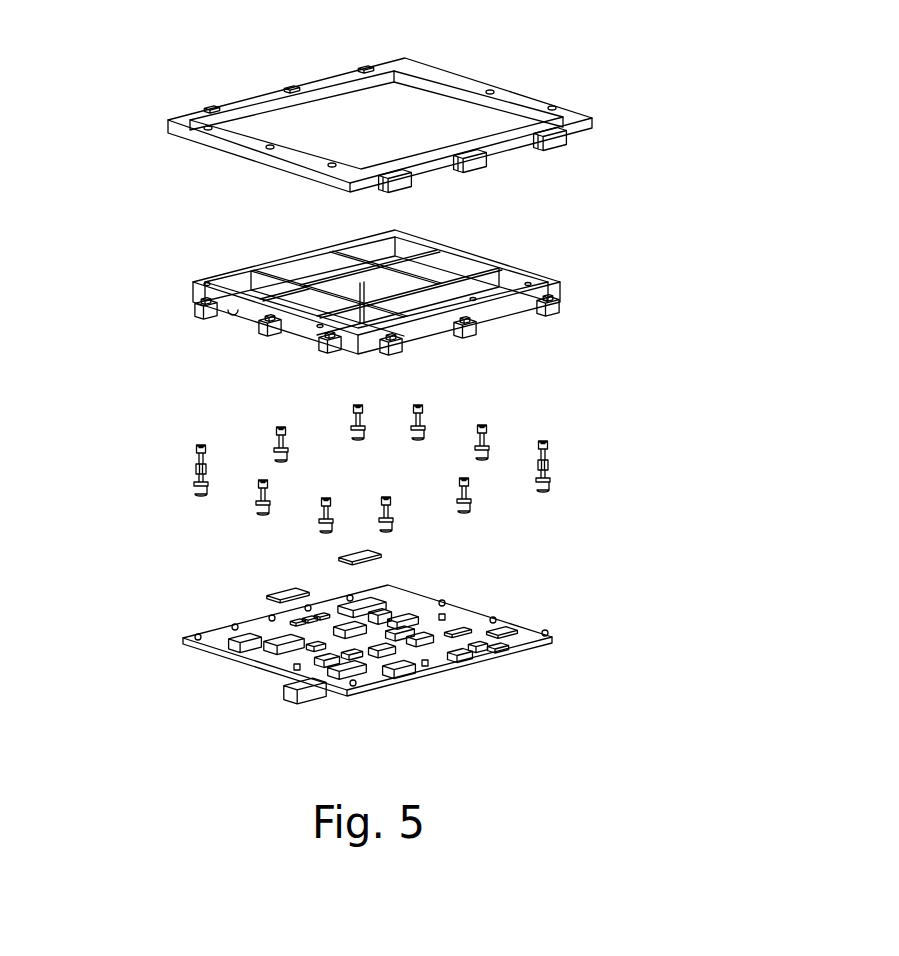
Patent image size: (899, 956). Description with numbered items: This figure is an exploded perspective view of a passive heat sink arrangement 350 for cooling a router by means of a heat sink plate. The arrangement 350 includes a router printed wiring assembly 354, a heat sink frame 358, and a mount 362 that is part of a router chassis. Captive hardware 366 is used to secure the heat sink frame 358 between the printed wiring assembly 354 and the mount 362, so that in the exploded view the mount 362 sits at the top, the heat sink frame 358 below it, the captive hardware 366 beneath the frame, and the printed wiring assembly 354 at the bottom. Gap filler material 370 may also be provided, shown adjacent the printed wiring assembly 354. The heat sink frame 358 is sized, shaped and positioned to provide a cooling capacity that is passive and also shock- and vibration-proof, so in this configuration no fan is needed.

The passive heat sink arrangement 350 is at (650, 350).
The router printed wiring assembly 354 is at (522, 630).
The heat sink frame 358 is at (527, 267).
The mount 362 is at (565, 102).
The captive hardware 366 is at (550, 456).
The gap filler material 370 is at (283, 588).